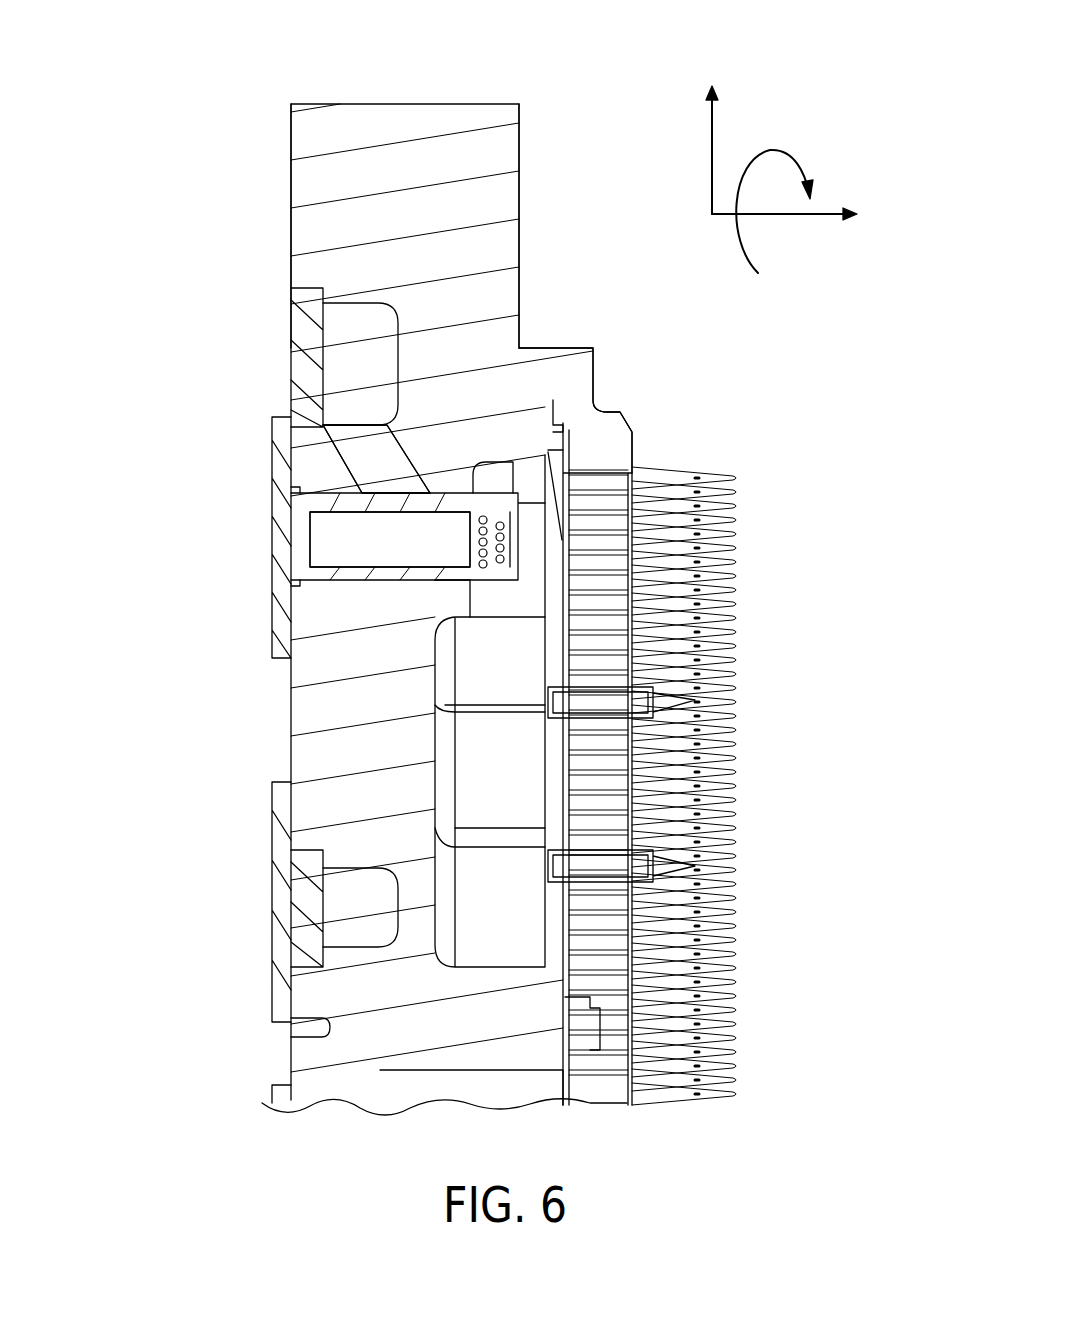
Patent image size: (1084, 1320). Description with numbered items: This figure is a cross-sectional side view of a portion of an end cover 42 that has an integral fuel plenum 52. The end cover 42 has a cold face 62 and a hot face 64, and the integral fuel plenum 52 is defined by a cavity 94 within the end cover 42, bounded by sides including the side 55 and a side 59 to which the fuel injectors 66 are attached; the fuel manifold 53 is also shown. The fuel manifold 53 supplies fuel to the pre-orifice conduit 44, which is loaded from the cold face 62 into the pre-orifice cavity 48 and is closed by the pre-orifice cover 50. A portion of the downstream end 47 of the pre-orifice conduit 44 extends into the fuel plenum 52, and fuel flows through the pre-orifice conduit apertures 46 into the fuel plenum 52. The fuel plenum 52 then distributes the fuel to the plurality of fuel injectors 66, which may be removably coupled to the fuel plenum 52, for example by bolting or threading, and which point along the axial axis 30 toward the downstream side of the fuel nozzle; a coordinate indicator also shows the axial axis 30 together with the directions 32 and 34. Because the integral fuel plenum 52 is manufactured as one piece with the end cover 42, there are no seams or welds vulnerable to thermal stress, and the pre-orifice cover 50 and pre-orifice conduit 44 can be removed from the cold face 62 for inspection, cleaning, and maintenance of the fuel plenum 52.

The axial axis 30 is at (776, 217).
The radial direction 32 is at (712, 157).
The circumferential direction 34 is at (735, 240).
The end cover 42 is at (397, 88).
The pre-orifice conduit 44 is at (333, 548).
The pre-orifice conduit apertures 46 is at (497, 557).
The downstream end 47 is at (468, 532).
The pre-orifice cavity 48 is at (335, 492).
The pre-orifice cover 50 is at (272, 540).
The integral fuel plenum 52 is at (510, 948).
The fuel manifold 53 is at (373, 913).
The side 55 is at (507, 477).
The side 59 is at (562, 540).
The cold face 62 is at (290, 176).
The hot face 64 is at (520, 187).
The fuel injectors 66 is at (735, 562).
The cavity 94 is at (433, 795).